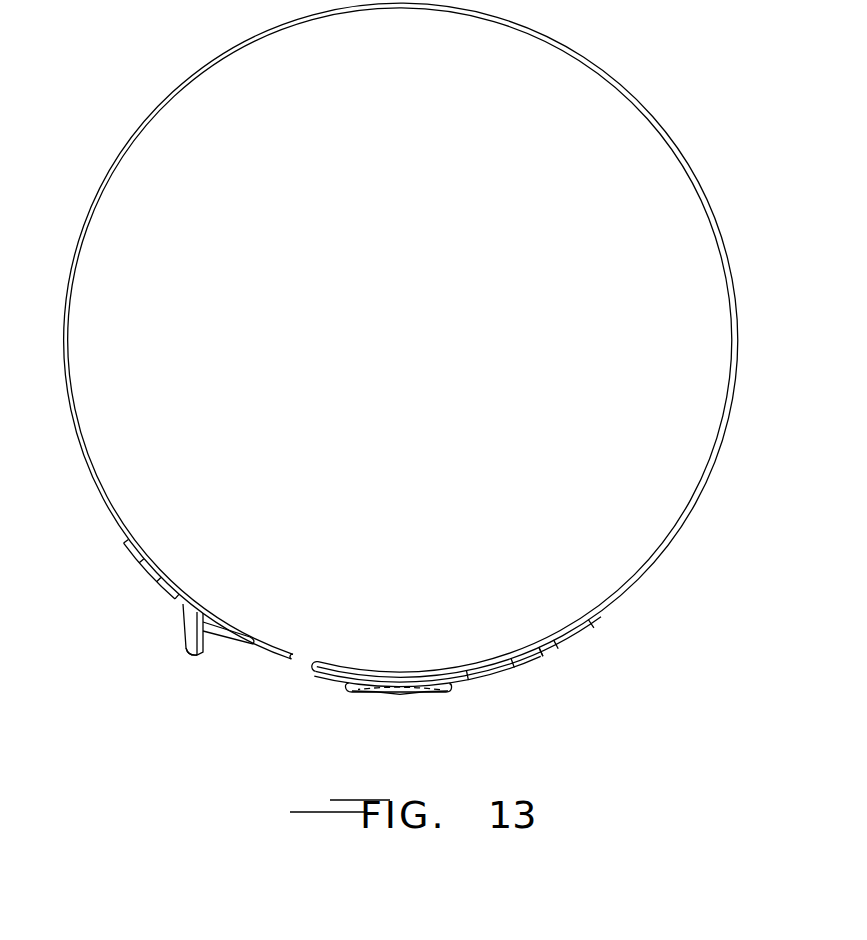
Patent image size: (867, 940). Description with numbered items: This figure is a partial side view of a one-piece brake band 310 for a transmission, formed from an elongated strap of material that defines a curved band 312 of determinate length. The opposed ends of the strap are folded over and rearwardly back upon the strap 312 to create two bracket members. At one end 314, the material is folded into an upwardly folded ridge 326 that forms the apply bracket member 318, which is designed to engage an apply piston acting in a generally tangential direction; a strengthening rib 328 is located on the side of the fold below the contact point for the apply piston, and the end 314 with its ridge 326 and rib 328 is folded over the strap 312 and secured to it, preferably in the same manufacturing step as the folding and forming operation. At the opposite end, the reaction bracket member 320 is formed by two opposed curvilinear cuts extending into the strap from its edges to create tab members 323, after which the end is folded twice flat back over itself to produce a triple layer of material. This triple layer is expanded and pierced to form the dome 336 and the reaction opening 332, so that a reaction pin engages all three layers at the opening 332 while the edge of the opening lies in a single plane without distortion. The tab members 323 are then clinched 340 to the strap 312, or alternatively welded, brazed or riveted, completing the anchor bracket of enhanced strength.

The one-piece brake band 310 is at (624, 66).
The curved band 312 is at (633, 580).
The end 314 is at (153, 542).
The apply bracket member 318 is at (180, 633).
The reaction bracket member 320 is at (477, 678).
The tab members 323 is at (583, 622).
The upwardly folded ridge 326 is at (183, 656).
The strengthening rib 328 is at (217, 640).
The reaction opening 332 is at (385, 695).
The dome 336 is at (430, 695).
The clinch 340 is at (553, 648).